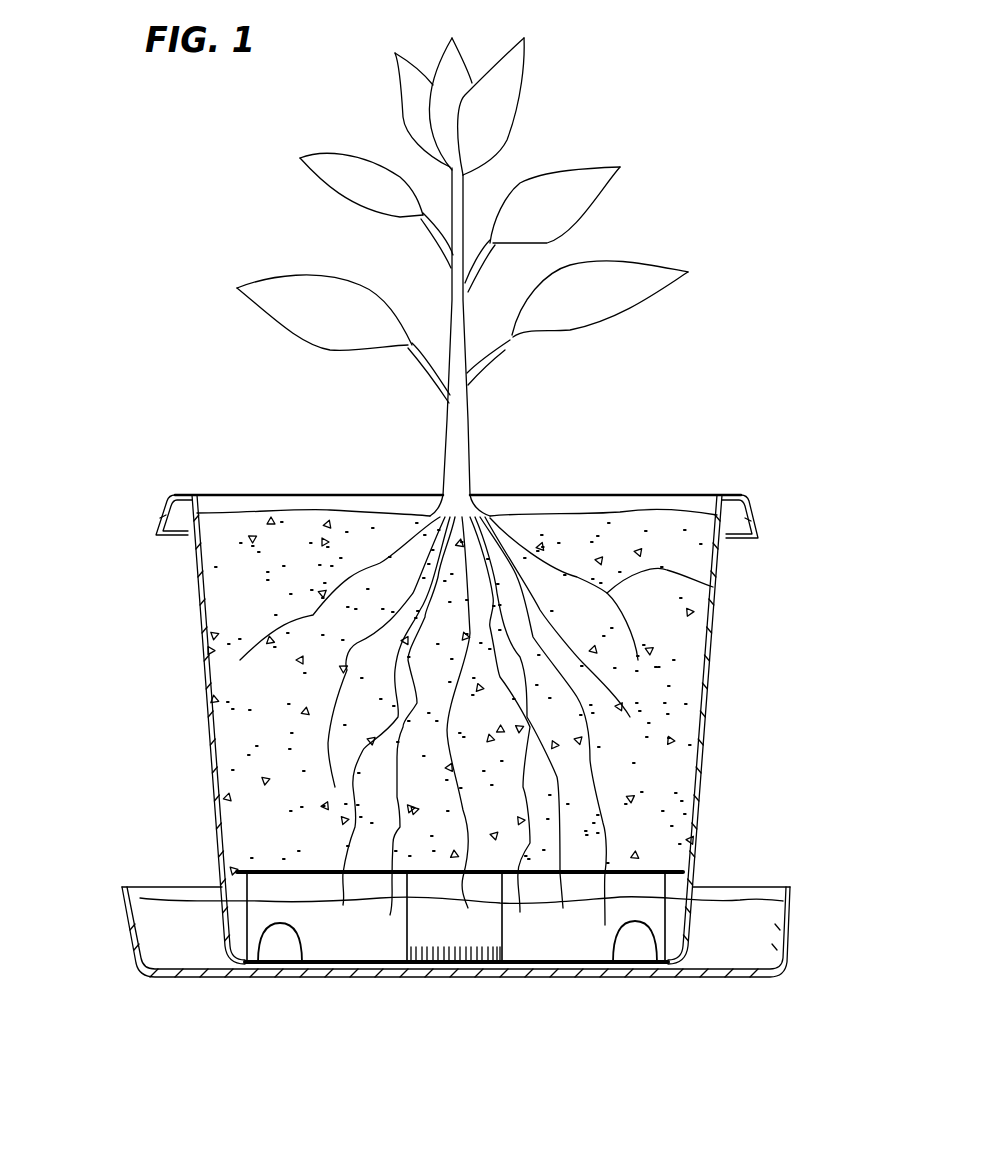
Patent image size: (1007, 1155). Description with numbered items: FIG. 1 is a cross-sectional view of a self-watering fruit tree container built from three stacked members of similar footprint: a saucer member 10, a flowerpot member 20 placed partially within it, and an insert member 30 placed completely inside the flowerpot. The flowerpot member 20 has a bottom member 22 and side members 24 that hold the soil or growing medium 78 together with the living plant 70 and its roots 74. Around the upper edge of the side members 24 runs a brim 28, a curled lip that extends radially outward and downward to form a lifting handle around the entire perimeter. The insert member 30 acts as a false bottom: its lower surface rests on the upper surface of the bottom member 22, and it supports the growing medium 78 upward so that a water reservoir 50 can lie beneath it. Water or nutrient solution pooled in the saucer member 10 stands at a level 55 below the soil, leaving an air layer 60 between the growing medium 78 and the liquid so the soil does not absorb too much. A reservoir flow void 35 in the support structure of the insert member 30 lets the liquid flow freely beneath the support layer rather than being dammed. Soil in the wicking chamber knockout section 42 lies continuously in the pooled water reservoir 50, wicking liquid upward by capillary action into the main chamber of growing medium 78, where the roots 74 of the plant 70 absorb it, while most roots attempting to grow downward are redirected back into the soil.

The saucer member 10 is at (781, 957).
The flowerpot member 20 is at (703, 763).
The bottom member 22 is at (532, 967).
The side member 24 is at (531, 727).
The brim 28 is at (750, 500).
The insert member 30 is at (367, 940).
The reservoir flow void 35 is at (640, 943).
The wicking chamber knockout section 42 is at (468, 938).
The water reservoir 50 is at (162, 957).
The water or nutrient solution level 55 is at (140, 898).
The air layer 60 is at (640, 888).
The plant 70 is at (618, 167).
The roots 74 is at (713, 587).
The growing medium 78 is at (663, 693).